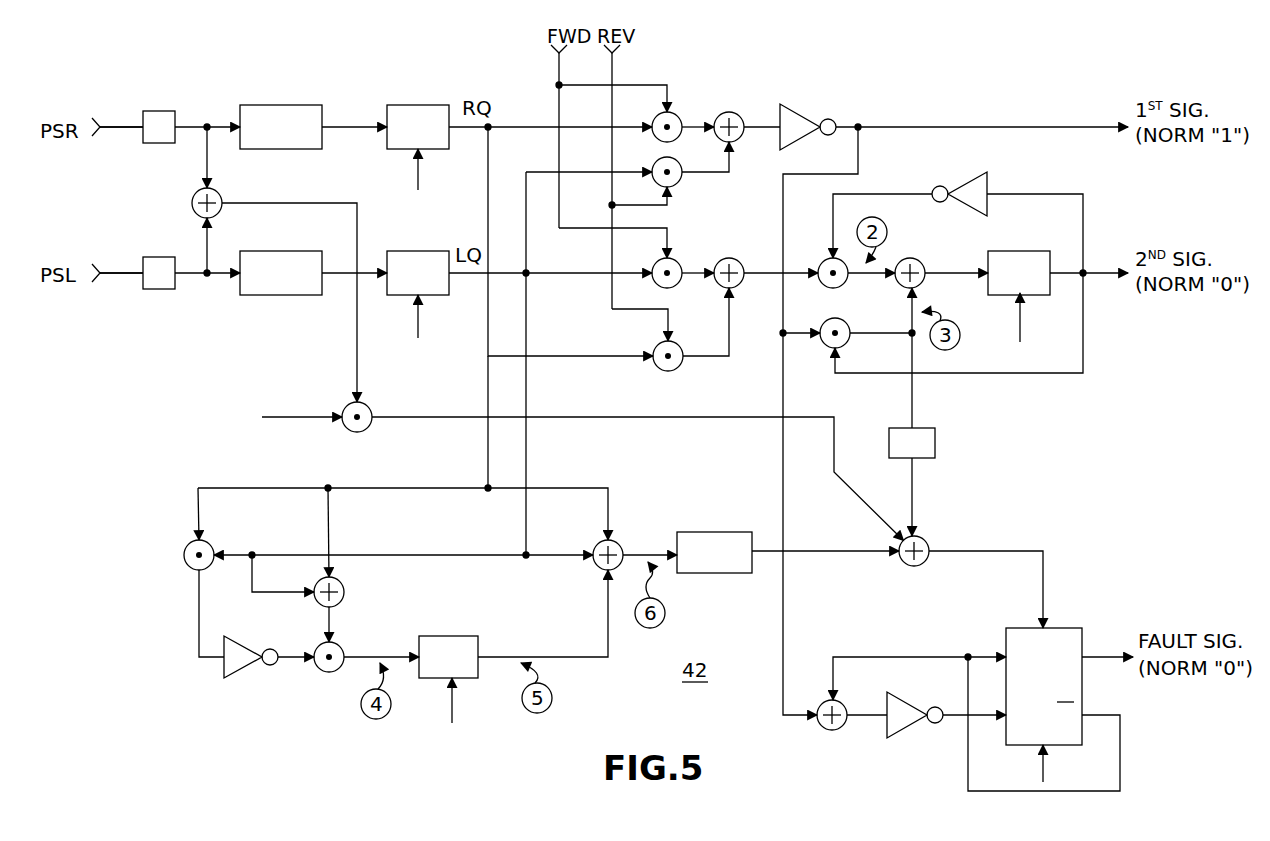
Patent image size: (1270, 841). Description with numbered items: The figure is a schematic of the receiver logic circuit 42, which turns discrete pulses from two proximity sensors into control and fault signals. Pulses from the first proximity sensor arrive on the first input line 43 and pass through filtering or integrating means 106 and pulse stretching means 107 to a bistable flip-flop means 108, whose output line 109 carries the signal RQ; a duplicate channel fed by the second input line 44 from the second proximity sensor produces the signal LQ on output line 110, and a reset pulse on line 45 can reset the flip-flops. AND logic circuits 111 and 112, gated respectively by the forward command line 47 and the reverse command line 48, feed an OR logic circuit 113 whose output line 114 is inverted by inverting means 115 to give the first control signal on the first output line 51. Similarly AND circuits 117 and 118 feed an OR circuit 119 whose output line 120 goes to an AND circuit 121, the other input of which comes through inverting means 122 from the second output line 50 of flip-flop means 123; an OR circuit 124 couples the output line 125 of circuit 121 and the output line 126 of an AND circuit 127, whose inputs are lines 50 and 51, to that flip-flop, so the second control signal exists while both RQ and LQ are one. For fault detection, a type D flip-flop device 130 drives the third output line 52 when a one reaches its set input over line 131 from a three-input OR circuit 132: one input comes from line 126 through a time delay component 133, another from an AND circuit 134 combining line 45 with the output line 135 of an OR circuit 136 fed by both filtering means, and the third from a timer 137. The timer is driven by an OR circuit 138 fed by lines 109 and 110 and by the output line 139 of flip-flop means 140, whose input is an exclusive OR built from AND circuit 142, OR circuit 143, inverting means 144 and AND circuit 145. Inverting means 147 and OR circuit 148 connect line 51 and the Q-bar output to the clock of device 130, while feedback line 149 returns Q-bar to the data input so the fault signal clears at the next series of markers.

The receiver logic circuit 42 is at (708, 682).
The first input line 43 is at (118, 130).
The second input line 44 is at (118, 270).
The reset pulse line 45 is at (410, 180).
The forward command line 47 is at (556, 78).
The reverse command line 48 is at (612, 74).
The second output line 50 is at (1095, 268).
The first output line 51 is at (1015, 124).
The third output line 52 is at (1105, 652).
The filtering or integrating means 106 is at (162, 114).
The pulse stretching means 107 is at (284, 106).
The bistable flip-flop means 108 is at (411, 103).
The output line 109 is at (467, 130).
The output line 110 is at (470, 276).
The AND logic circuit 111 is at (677, 110).
The AND logic circuit 112 is at (682, 180).
The OR logic circuit 113 is at (732, 112).
The output line 114 is at (760, 130).
The inverting means 115 is at (800, 112).
The AND logic circuit 117 is at (676, 370).
The AND logic circuit 118 is at (677, 258).
The OR logic circuit 119 is at (748, 261).
The output line 120 is at (760, 276).
The AND logic circuit 121 is at (822, 258).
The inverting means 122 is at (952, 176).
The bistable flip-flop means 123 is at (1026, 252).
The OR circuit 124 is at (925, 265).
The output line 125 is at (866, 276).
The output line 126 is at (880, 336).
The AND logic circuit 127 is at (834, 318).
The type D flip-flop device 130 is at (1005, 629).
The line 131 is at (1028, 548).
The OR logic circuit 132 is at (912, 566).
The time delay component 133 is at (935, 432).
The AND logic circuit 134 is at (355, 432).
The output line 135 is at (357, 330).
The OR logic circuit 136 is at (190, 201).
The timer 137 is at (720, 530).
The OR logic circuit 138 is at (620, 536).
The output line 139 is at (576, 656).
The bistable flip-flop means 140 is at (461, 636).
The AND circuit 142 is at (342, 646).
The OR circuit 143 is at (344, 590).
The inverting means 144 is at (229, 680).
The AND circuit 145 is at (182, 553).
The inverting means 147 is at (893, 734).
The OR logic circuit 148 is at (825, 730).
The feedback line 149 is at (1125, 768).